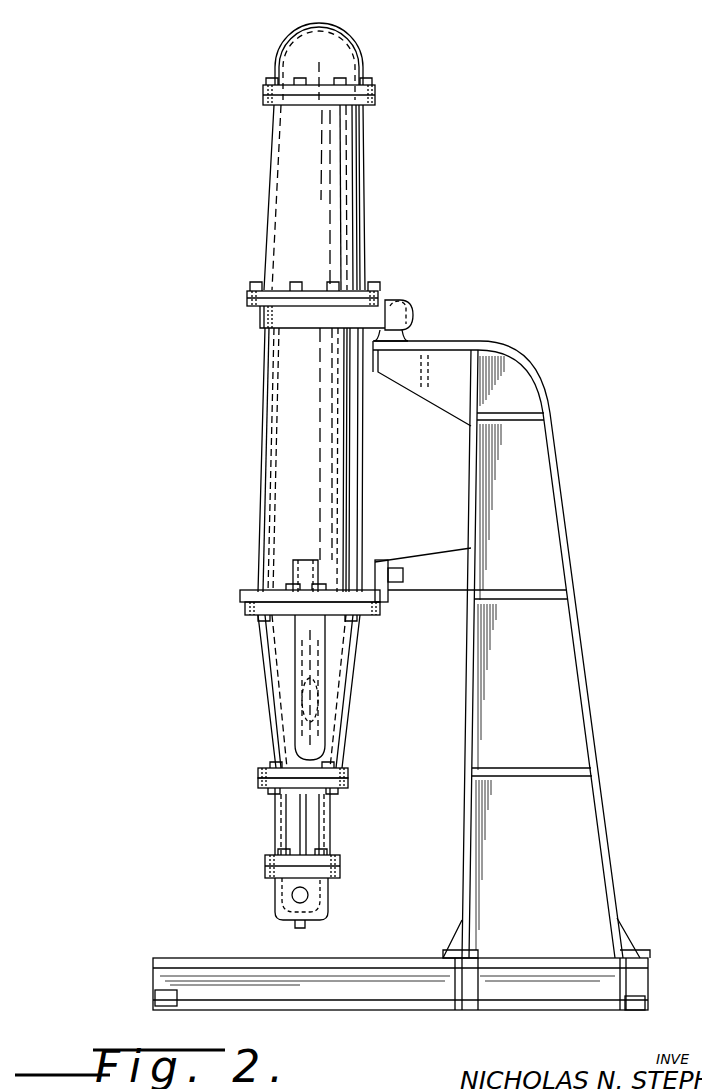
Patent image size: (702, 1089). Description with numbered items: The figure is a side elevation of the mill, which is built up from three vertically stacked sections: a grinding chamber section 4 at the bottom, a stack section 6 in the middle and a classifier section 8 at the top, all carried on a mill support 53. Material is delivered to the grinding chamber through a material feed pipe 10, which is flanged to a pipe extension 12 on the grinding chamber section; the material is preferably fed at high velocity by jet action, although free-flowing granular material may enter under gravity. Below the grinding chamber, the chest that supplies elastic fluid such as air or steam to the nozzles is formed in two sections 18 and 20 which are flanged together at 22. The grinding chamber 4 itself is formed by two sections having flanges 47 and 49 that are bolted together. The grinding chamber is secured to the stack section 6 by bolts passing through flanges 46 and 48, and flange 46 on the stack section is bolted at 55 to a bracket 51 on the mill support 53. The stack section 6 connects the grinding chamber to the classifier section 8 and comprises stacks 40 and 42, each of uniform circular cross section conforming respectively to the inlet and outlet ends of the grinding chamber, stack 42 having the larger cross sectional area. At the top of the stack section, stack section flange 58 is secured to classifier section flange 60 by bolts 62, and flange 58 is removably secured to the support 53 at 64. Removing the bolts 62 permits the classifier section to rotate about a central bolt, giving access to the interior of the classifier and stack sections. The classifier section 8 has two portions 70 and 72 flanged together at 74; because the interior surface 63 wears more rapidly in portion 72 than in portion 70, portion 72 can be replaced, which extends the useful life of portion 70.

The grinding chamber section 4 is at (206, 797).
The stack section 6 is at (234, 473).
The classifier section 8 is at (234, 205).
The material feed pipe 10 is at (296, 566).
The pipe extension 12 is at (318, 680).
The chest section 18 is at (330, 832).
The chest section 20 is at (280, 895).
The flange 22 is at (268, 868).
The stack 40 is at (285, 517).
The stack 42 is at (364, 480).
The flange 46 is at (245, 602).
The flange 48 is at (240, 612).
The flange 47 is at (348, 776).
The flange 49 is at (350, 784).
The bracket 51 is at (425, 565).
The mill support 53 is at (555, 553).
The bolt 55 is at (386, 566).
The stack section flange 58 is at (260, 314).
The classifier section flange 60 is at (382, 298).
The bolts 62 is at (370, 290).
The interior surface 63 is at (319, 65).
The removable securing point 64 is at (412, 306).
The classifier portion 70 is at (345, 185).
The classifier portion 72 is at (357, 42).
The flange 74 is at (378, 96).